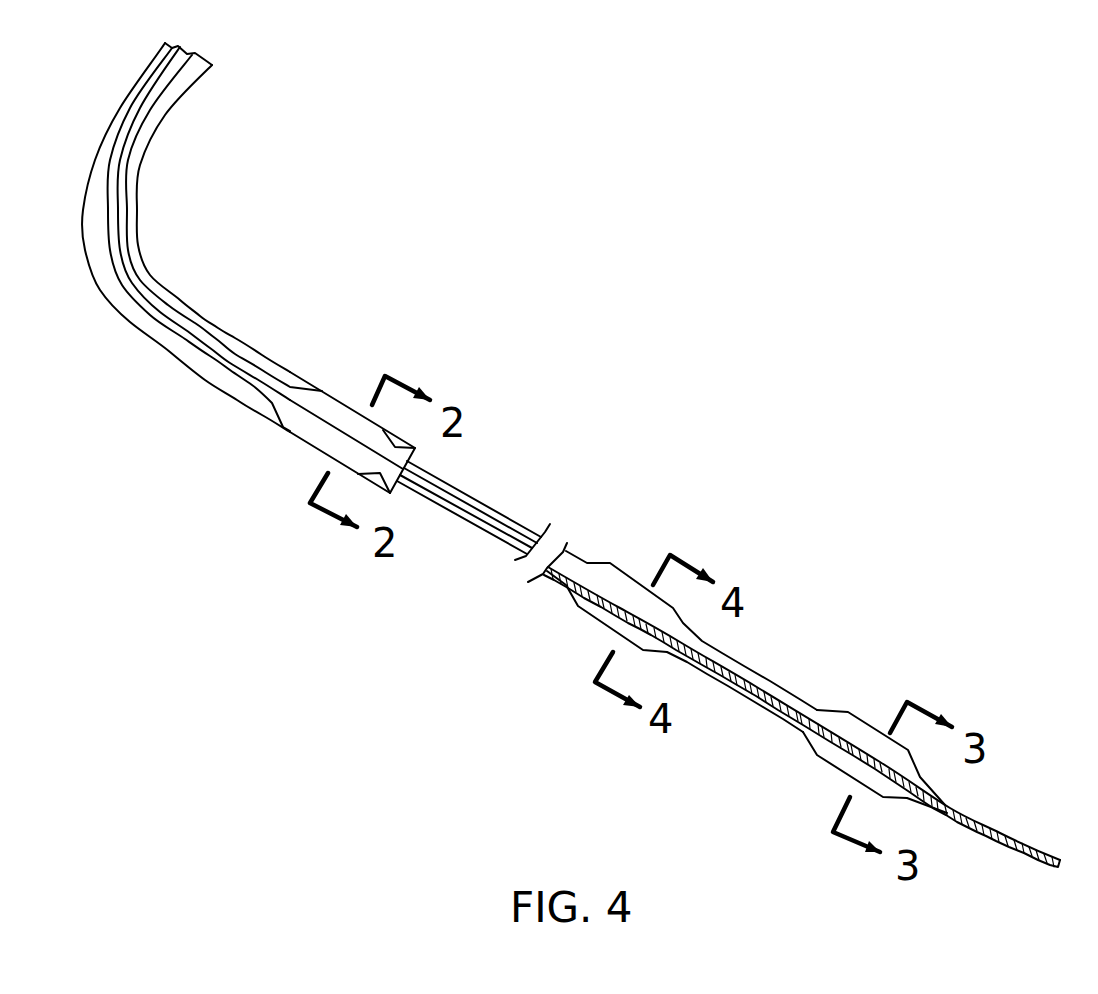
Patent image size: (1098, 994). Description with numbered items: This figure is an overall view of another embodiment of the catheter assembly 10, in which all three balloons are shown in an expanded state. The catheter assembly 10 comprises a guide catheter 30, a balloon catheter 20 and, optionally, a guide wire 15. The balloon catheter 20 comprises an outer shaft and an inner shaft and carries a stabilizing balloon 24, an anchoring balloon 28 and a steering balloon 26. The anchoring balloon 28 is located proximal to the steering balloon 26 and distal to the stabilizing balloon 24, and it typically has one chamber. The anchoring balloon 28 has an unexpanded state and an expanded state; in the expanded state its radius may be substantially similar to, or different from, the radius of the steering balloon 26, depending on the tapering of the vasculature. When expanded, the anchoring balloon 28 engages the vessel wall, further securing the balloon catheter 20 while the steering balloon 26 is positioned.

The catheter assembly 10 is at (287, 598).
The guide wire 15 is at (1040, 846).
The balloon catheter 20 is at (495, 508).
The stabilizing balloon 24 is at (337, 402).
The steering balloon 26 is at (852, 720).
The anchoring balloon 28 is at (621, 580).
The guide catheter 30 is at (216, 318).